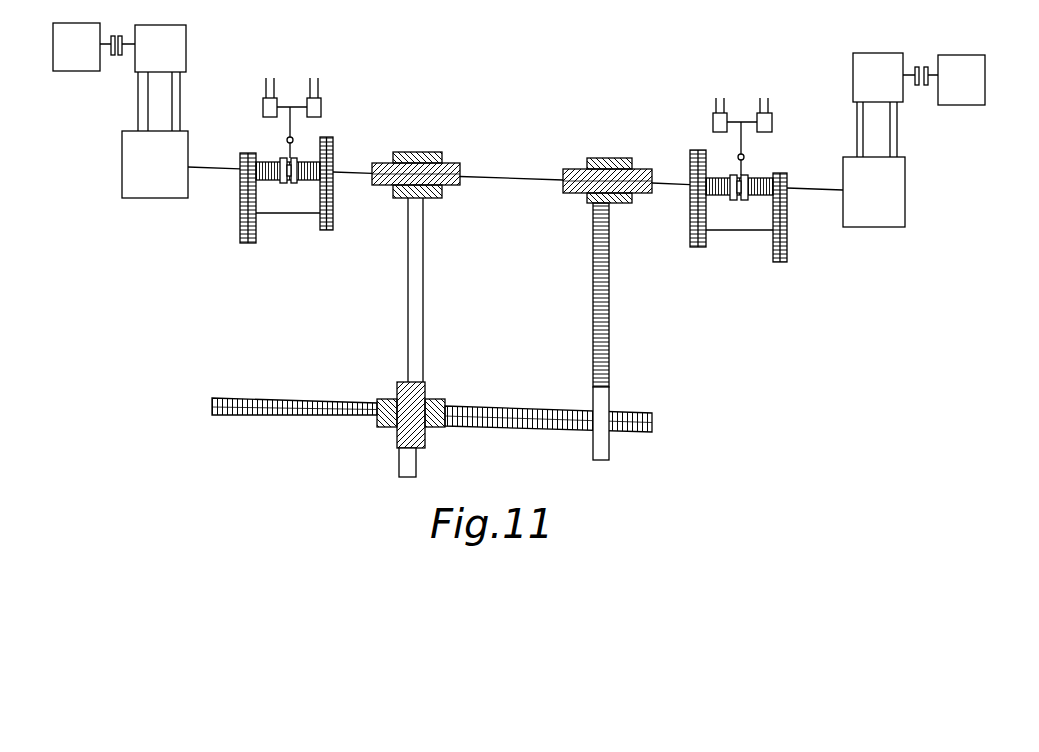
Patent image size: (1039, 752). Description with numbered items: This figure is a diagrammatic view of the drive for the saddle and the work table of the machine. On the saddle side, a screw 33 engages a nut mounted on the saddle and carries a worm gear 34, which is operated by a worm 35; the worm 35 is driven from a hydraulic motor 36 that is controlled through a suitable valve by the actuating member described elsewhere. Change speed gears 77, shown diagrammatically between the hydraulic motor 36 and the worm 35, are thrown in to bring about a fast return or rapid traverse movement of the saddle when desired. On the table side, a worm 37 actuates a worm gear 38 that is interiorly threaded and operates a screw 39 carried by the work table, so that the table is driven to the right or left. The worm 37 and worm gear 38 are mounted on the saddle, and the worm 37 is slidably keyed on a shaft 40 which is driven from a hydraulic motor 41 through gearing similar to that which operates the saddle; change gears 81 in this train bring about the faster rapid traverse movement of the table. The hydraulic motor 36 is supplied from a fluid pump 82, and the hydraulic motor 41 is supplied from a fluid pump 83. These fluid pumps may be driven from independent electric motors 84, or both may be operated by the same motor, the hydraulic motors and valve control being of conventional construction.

The screw 33 is at (612, 322).
The worm gear 34 is at (615, 162).
The worm 35 is at (590, 203).
The hydraulic motor 36 is at (868, 212).
The worm 37 is at (438, 428).
The worm gear 38 is at (427, 385).
The screw 39 is at (355, 418).
The shaft 40 is at (407, 350).
The hydraulic motor 41 is at (148, 188).
The change speed gears 77 is at (773, 258).
The change gears 81 is at (240, 220).
The fluid pump 82 is at (858, 68).
The fluid pump 83 is at (182, 60).
The electric motors 84 is at (62, 40).